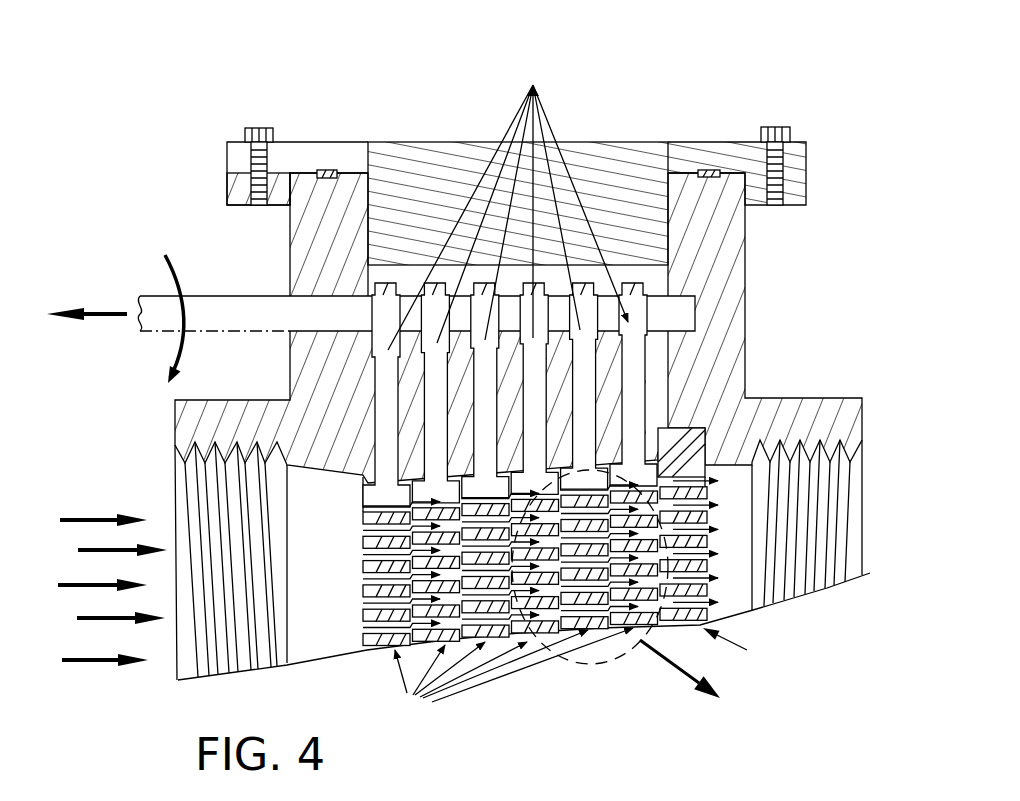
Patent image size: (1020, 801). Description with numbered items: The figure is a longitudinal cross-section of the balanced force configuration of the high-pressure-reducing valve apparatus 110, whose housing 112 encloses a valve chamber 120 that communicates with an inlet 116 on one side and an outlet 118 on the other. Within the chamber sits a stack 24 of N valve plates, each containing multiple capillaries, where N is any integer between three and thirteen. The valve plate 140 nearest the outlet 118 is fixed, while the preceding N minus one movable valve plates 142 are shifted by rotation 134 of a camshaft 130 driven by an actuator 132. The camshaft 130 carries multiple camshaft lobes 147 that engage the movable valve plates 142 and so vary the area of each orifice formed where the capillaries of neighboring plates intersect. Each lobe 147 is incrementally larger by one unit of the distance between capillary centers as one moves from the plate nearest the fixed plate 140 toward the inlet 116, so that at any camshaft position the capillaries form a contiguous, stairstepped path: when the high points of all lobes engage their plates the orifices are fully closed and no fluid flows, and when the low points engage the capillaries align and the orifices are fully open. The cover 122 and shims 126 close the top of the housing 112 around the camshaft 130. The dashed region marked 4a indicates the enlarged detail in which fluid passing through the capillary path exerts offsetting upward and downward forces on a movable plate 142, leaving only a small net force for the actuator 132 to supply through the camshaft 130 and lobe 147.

The valve apparatus 110 is at (682, 137).
The housing body 112 is at (315, 247).
The inlet 116 is at (168, 540).
The outlet 118 is at (870, 517).
The valve chamber 120 is at (572, 273).
The cover block 122 is at (407, 165).
The spacer shim 126 is at (312, 169).
The camshaft 130 is at (675, 312).
The actuator 132 is at (87, 298).
The rotation 134 is at (153, 320).
The stack of valve plates 24 is at (363, 508).
The fixed valve plate 140 is at (752, 648).
The movable valve plates 142 is at (512, 676).
The camshaft lobes 147 is at (508, 201).
The detail view region 4a is at (649, 603).